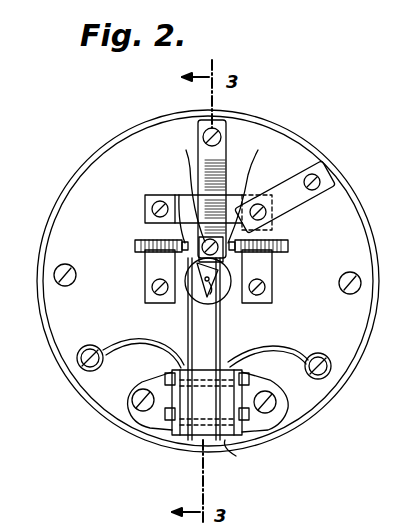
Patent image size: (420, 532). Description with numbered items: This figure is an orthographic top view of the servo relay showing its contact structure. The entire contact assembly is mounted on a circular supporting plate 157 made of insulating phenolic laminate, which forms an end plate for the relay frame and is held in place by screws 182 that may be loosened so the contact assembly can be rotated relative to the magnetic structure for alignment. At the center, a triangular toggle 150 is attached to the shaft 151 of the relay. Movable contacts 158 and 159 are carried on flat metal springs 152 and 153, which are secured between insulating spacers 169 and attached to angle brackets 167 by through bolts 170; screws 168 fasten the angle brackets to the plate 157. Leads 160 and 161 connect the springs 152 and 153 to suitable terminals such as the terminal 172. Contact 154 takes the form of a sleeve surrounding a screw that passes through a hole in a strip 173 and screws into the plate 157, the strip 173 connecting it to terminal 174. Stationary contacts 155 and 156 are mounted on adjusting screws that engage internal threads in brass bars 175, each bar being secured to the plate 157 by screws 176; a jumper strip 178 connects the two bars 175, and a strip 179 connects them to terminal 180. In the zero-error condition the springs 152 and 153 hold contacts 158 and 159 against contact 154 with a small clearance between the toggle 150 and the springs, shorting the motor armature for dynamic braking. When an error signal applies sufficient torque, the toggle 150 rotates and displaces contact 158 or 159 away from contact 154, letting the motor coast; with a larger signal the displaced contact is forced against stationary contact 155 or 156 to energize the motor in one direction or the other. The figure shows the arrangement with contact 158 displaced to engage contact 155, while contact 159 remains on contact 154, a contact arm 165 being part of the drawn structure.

The triangular toggle 150 is at (224, 298).
The shaft 151 is at (200, 295).
The spring 152 is at (165, 338).
The spring 153 is at (240, 362).
The contact 154 is at (190, 175).
The stationary contact 155 is at (178, 196).
The stationary contact 156 is at (248, 196).
The supporting plate 157 is at (128, 120).
The movable contact 158 is at (199, 250).
The movable contact 159 is at (248, 176).
The lead 160 is at (103, 347).
The lead 161 is at (315, 353).
The contact arm 165 is at (222, 320).
The angle bracket 167 is at (150, 425).
The screw 168 is at (134, 400).
The insulating spacer 169 is at (204, 444).
The through bolt 170 is at (250, 432).
The terminal 172 is at (128, 392).
The strip 173 is at (227, 140).
The terminal 174 is at (220, 131).
The bar 175 is at (145, 279).
The screw 176 is at (152, 210).
The jumper strip 178 is at (145, 198).
The strip 179 is at (305, 204).
The terminal 180 is at (320, 180).
The screw 182 is at (62, 264).